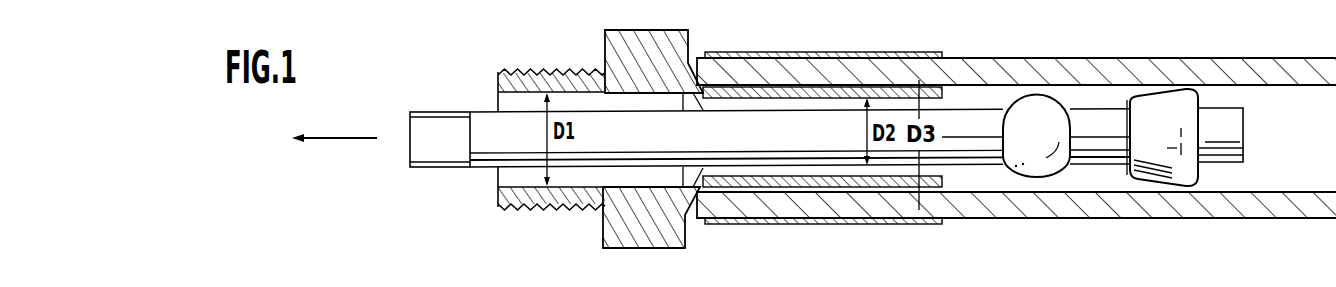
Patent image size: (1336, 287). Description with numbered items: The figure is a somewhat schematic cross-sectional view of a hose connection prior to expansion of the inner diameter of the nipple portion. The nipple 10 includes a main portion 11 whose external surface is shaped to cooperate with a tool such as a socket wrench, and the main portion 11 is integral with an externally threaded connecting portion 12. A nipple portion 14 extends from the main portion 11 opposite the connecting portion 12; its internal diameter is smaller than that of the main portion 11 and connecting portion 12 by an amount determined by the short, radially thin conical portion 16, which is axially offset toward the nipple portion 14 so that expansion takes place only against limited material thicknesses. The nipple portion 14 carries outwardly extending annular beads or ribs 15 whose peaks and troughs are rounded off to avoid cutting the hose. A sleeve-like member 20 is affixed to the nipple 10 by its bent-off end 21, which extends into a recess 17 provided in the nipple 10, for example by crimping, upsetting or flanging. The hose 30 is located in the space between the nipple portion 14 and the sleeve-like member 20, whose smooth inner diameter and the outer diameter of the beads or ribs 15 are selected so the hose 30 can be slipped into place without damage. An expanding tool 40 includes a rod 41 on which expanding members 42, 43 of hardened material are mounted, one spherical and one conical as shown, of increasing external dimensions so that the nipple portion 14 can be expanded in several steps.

The nipple 10 is at (657, 25).
The main portion 11 is at (603, 237).
The externally threaded connecting portion 12 is at (538, 68).
The nipple portion 14 is at (762, 101).
The annular beads or ribs 15 is at (793, 205).
The conical portion 16 is at (692, 112).
The recess 17 is at (672, 249).
The sleeve-like member 20 is at (820, 53).
The bent-off end 21 is at (703, 60).
The hose 30 is at (1072, 55).
The expanding tool 40 is at (1250, 141).
The rod 41 is at (1088, 153).
The expanding member 42 is at (1042, 178).
The expanding member 43 is at (1163, 181).